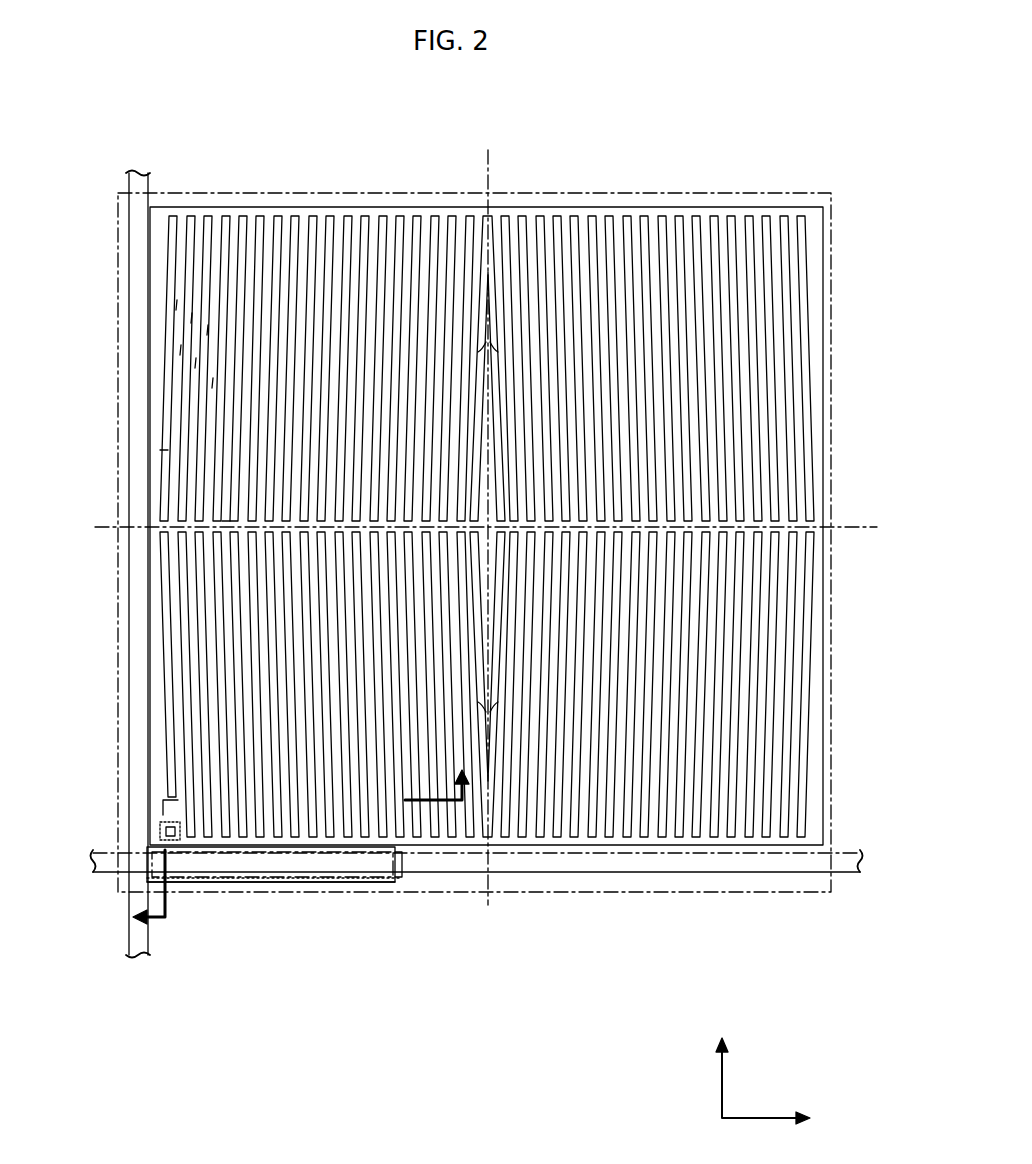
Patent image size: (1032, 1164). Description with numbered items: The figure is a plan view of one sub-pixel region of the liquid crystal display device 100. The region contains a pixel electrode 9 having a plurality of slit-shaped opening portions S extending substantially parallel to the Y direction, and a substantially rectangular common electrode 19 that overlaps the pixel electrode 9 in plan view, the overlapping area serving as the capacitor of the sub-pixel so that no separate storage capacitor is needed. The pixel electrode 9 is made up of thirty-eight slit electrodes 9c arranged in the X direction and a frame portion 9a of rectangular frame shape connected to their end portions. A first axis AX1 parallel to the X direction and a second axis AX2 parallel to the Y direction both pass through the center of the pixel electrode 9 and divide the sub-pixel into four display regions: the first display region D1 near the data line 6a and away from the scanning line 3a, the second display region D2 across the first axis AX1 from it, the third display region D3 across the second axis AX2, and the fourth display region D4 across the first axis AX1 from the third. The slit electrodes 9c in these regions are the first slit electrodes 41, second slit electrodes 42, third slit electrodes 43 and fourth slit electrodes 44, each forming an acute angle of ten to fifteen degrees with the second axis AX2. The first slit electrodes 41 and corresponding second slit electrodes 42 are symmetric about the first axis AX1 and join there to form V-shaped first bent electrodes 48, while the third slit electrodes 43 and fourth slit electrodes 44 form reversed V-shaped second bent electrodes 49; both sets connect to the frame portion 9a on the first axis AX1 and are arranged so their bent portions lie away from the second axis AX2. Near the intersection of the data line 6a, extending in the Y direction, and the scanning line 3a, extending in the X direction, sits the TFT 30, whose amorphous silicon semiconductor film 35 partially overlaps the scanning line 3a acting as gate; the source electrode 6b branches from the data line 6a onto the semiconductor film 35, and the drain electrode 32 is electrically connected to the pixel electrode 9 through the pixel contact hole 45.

The liquid crystal display device 100 is at (722, 170).
The common electrode 19 is at (116, 689).
The second axis AX2 is at (486, 166).
The first axis AX1 is at (862, 527).
The data line 6a is at (130, 188).
The source electrode 6b is at (212, 882).
The scanning line 3a is at (722, 875).
The pixel electrode 9 is at (151, 397).
The frame portion 9a is at (227, 526).
The slit electrodes 9c is at (206, 325).
The opening portions S is at (212, 378).
The first bent electrodes 48 is at (275, 549).
The second bent electrodes 49 is at (712, 549).
The first slit electrodes 41 is at (328, 245).
The second slit electrodes 42 is at (177, 567).
The third slit electrodes 43 is at (655, 826).
The fourth slit electrodes 44 is at (655, 245).
The pixel contact hole 45 is at (157, 834).
The TFT 30 is at (329, 884).
The drain electrode 32 is at (270, 856).
The semiconductor film 35 is at (244, 882).
The first display region D1 is at (263, 199).
The second display region D2 is at (408, 852).
The third display region D3 is at (577, 852).
The fourth display region D4 is at (570, 199).